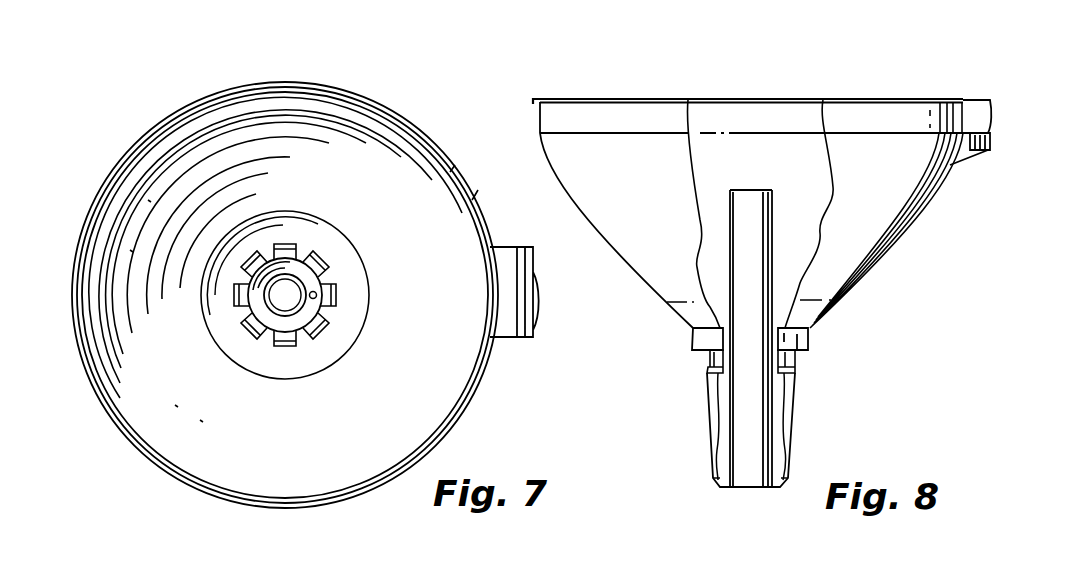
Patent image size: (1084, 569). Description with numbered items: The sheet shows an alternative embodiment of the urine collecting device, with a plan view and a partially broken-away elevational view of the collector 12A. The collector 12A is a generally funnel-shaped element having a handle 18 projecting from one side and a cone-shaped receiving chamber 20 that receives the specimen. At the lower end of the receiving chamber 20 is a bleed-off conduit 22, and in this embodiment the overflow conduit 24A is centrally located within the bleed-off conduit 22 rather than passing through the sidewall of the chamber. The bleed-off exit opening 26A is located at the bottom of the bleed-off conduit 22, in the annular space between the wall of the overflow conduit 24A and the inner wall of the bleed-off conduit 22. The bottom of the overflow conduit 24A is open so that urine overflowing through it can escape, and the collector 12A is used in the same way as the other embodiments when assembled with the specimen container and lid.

In FIG. 7, the collector 12A is at (153, 125).
In FIG. 8, the collector 12A is at (869, 100).
In FIG. 7, the handle 18 is at (524, 337).
In FIG. 8, the handle 18 is at (982, 99).
In FIG. 8, the cone-shaped receiving chamber 20 is at (777, 114).
In FIG. 8, the bleed-off conduit 22 is at (795, 400).
In FIG. 7, the overflow conduit 24A is at (282, 312).
In FIG. 8, the overflow conduit 24A is at (777, 190).
In FIG. 7, the bleed-off exit opening 26A is at (316, 292).